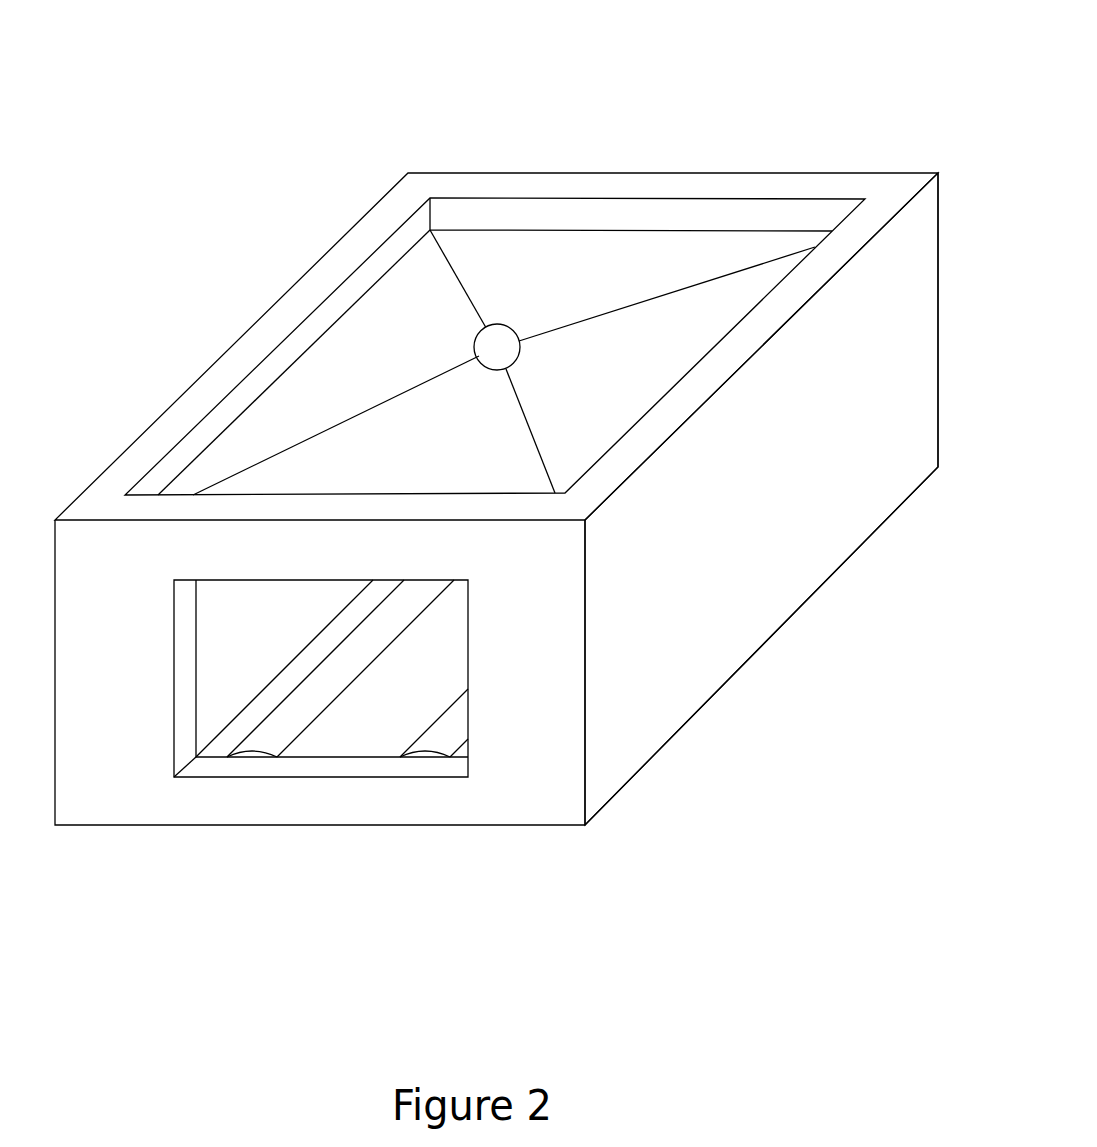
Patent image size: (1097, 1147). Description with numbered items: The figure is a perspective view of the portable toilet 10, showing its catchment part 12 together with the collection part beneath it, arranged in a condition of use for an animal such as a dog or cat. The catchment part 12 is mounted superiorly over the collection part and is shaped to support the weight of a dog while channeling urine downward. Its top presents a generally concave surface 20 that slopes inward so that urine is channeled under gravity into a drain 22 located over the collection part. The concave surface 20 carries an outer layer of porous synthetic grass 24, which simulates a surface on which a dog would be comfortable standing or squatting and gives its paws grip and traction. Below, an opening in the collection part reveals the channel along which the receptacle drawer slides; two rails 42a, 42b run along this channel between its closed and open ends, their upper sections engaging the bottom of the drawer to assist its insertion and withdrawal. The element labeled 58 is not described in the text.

The portable toilet 10 is at (733, 173).
The catchment part 12 is at (752, 558).
The concave surface 20 is at (407, 317).
The drain 22 is at (507, 323).
The synthetic grass 24 is at (273, 423).
The rail 42a is at (280, 720).
The rail 42b is at (443, 737).
The window ledge 58 is at (332, 768).